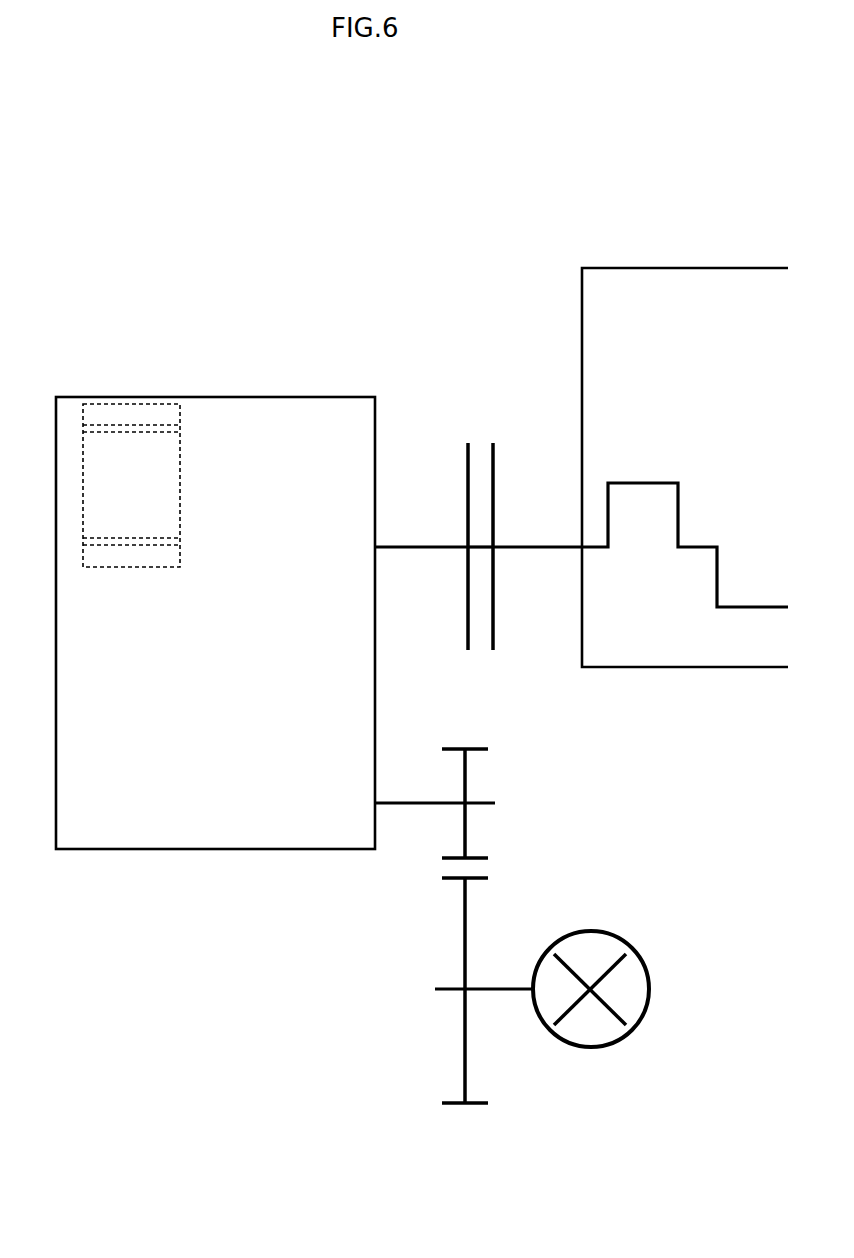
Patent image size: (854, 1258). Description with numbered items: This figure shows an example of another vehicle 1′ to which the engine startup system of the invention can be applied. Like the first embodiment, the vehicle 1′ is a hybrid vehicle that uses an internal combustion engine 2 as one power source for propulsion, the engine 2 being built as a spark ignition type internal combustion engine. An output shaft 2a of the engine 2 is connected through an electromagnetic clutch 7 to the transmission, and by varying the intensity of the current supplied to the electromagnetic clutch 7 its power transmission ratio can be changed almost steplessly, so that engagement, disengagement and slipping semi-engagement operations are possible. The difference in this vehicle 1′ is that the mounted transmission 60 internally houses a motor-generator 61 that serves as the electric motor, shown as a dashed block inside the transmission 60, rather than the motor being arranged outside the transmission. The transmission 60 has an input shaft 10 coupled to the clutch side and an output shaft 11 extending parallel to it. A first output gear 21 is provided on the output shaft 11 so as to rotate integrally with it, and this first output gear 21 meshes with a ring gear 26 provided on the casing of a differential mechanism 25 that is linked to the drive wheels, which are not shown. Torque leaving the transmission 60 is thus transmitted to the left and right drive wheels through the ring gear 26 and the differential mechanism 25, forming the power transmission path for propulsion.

The vehicle 1′ is at (438, 214).
The internal combustion engine 2 is at (681, 267).
The output shaft 2a is at (542, 545).
The electromagnetic clutch 7 is at (467, 436).
The input shaft 10 is at (418, 545).
The output shaft 11 is at (485, 800).
The first output gear 21 is at (470, 768).
The differential mechanism 25 is at (625, 935).
The ring gear 26 is at (470, 919).
The transmission 60 is at (262, 395).
The motor-generator 61 is at (116, 426).